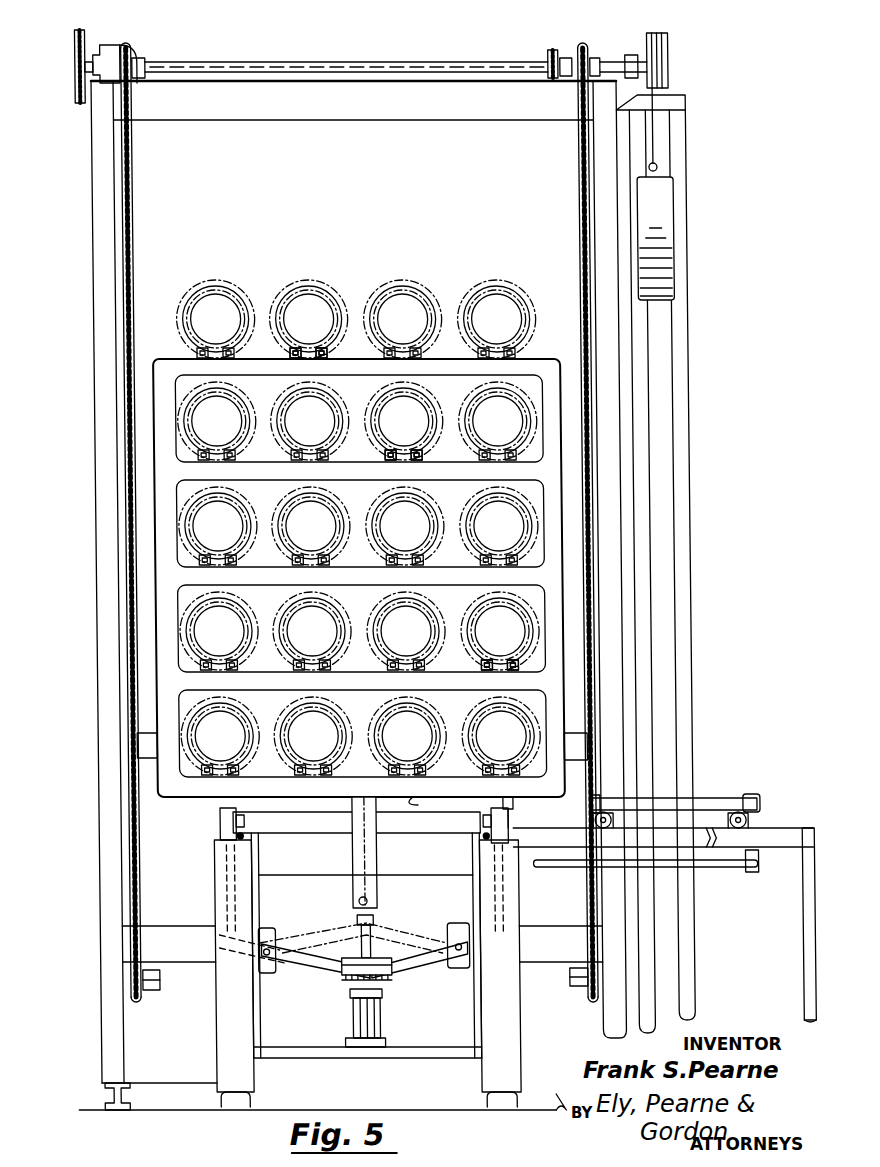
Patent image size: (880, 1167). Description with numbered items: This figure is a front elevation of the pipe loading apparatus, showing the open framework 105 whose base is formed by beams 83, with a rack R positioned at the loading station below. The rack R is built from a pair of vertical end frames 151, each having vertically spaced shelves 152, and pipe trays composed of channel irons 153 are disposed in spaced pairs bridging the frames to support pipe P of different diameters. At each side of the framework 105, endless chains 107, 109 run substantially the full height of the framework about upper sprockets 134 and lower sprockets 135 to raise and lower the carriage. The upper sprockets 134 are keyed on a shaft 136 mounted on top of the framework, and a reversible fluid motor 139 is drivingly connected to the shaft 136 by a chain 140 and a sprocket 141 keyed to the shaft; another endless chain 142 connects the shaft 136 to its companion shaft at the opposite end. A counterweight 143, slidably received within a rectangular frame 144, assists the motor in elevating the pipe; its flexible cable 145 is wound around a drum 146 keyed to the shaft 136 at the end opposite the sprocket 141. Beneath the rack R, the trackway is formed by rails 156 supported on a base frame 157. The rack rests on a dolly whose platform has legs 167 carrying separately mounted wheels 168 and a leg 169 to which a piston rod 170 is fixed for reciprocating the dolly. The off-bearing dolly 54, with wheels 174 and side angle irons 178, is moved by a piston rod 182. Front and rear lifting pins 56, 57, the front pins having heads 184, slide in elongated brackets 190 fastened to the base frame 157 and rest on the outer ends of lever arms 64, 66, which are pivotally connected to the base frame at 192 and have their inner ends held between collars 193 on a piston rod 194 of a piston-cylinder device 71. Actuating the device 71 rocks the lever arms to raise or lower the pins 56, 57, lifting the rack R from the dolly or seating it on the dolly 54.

The off-bearing dolly 54 is at (740, 800).
The front rack lifting pins 56 is at (504, 803).
The rear rack lifting pins 57 is at (338, 800).
The lever arm 64 is at (432, 960).
The lever arm 66 is at (270, 960).
The piston-cylinder device 71 is at (343, 1022).
The beams 83 is at (118, 1097).
The open framework 105 is at (91, 268).
The endless chain 107 is at (578, 242).
The endless chain 109 is at (133, 208).
The upper sprockets 134 is at (128, 48).
The lower sprockets 135 is at (131, 996).
The shaft 136 is at (288, 62).
The reversible fluid motor 139 is at (110, 45).
The chain 140 is at (75, 88).
The sprocket 141 is at (78, 28).
The endless chain 142 is at (548, 58).
The counterweight 143 is at (672, 272).
The rectangular frame 144 is at (688, 195).
The flexible cable 145 is at (655, 130).
The drum 146 is at (668, 42).
The vertical end frames 151 is at (536, 360).
The shelves 152 is at (420, 480).
The channel irons 153 is at (306, 346).
The rails 156 is at (500, 833).
The base frame 157 is at (512, 1020).
The legs 167 is at (240, 824).
The wheels 168 is at (236, 840).
The leg 169 is at (368, 890).
The piston rod 170 is at (350, 900).
The wheels 174 is at (740, 822).
The side angle irons 178 is at (700, 798).
The piston rod 182 is at (712, 868).
The head 184 is at (400, 800).
The elongated brackets 190 is at (216, 856).
The pivotal connection 192 is at (262, 944).
The collars 193 is at (372, 984).
The piston rod 194 is at (340, 995).
The packages P is at (480, 290).
The rack R is at (363, 537).